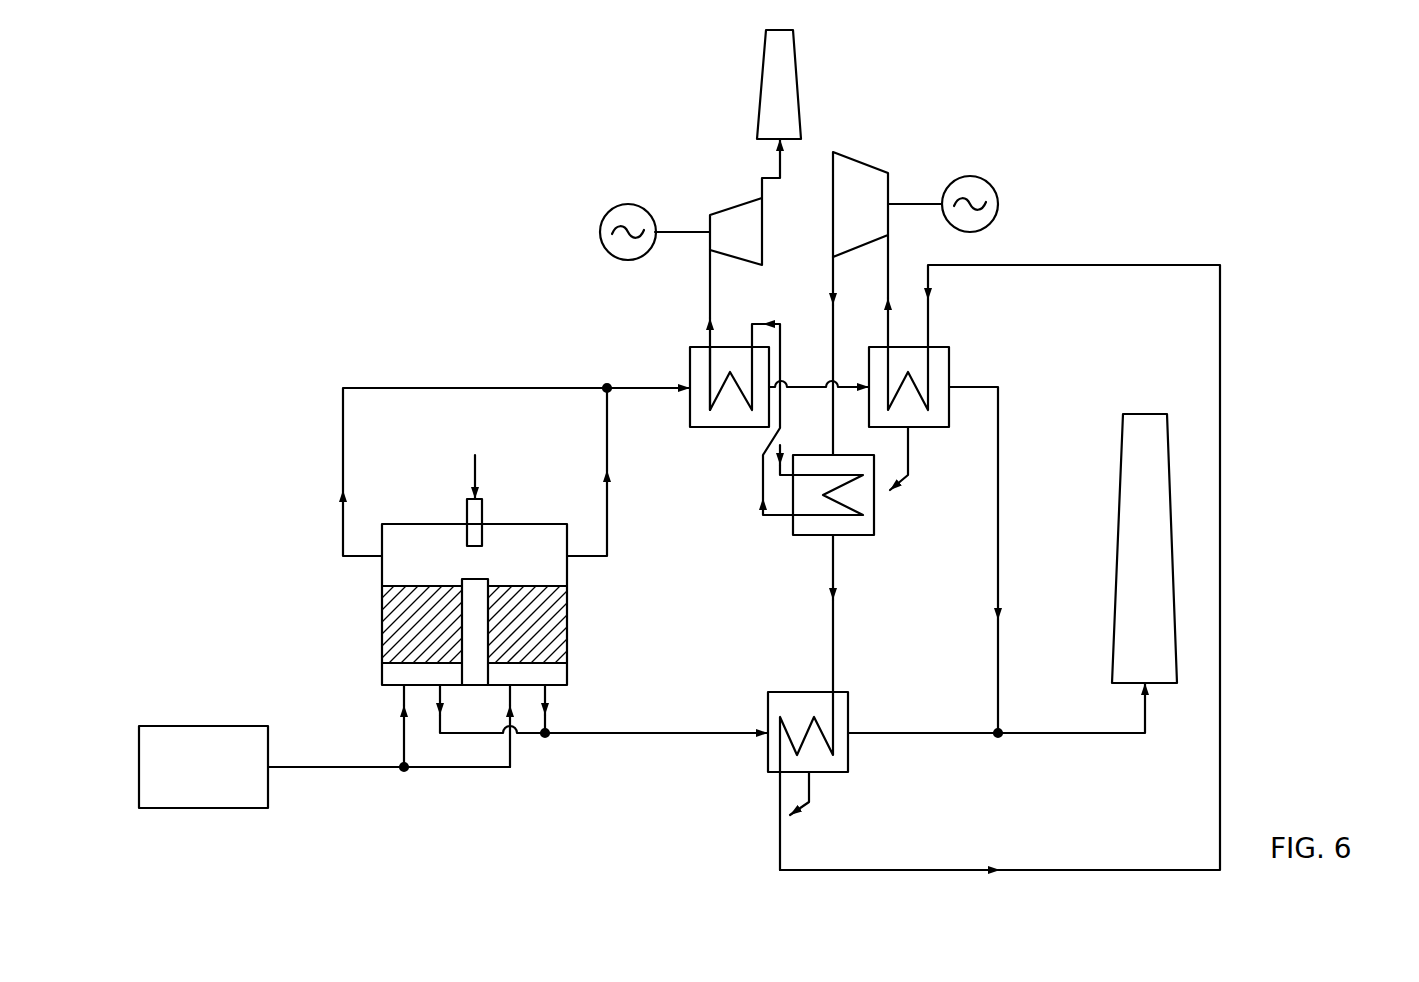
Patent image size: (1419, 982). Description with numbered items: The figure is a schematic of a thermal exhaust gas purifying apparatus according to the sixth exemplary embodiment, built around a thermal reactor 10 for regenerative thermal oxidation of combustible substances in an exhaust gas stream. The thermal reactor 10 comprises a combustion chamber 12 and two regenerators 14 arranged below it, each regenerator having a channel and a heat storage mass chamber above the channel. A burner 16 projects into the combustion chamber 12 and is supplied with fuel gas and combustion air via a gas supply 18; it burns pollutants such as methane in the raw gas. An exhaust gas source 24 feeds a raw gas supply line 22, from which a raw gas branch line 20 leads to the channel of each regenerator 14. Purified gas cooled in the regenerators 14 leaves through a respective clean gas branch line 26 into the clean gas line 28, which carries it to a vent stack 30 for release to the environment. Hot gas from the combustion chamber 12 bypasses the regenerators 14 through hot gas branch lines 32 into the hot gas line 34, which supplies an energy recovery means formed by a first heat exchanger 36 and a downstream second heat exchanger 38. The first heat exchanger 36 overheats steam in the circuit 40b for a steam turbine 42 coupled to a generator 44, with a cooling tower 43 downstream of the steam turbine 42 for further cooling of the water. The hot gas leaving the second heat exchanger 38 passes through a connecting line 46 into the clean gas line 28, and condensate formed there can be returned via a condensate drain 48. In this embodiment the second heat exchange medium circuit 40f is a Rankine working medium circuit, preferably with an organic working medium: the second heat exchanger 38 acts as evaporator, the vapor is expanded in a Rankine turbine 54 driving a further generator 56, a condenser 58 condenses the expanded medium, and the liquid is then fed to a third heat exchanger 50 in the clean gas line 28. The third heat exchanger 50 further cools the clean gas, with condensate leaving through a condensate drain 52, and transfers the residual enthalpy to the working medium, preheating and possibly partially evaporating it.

The thermal reactor 10 is at (492, 571).
The combustion chamber 12 is at (408, 530).
The regenerators 14 is at (392, 623).
The burner 16 is at (476, 515).
The gas supply 18 is at (476, 470).
The raw gas branch line 20 is at (404, 731).
The raw gas supply line 22 is at (340, 770).
The exhaust gas source 24 is at (203, 726).
The clean gas branch line 26 is at (441, 732).
The clean gas line 28 is at (660, 736).
The vent stack 30 is at (1122, 560).
The hot gas branch line 32 is at (343, 441).
The hot gas line 34 is at (630, 388).
The first heat exchanger 36 is at (727, 430).
The second heat exchanger 38 is at (949, 372).
The heat exchange medium circuit 40b is at (803, 304).
The second heat exchange medium circuit 40f is at (1130, 265).
The steam turbine 42 is at (718, 212).
The cooling tower 43 is at (761, 86).
The generator 44 is at (612, 208).
The connecting line 46 is at (998, 608).
The condensate drain 48 is at (912, 483).
The third heat exchanger 50 is at (850, 760).
The condensate drain 52 is at (812, 805).
The Rankine turbine 54 is at (850, 158).
The generator 56 is at (992, 187).
The condenser 58 is at (876, 516).